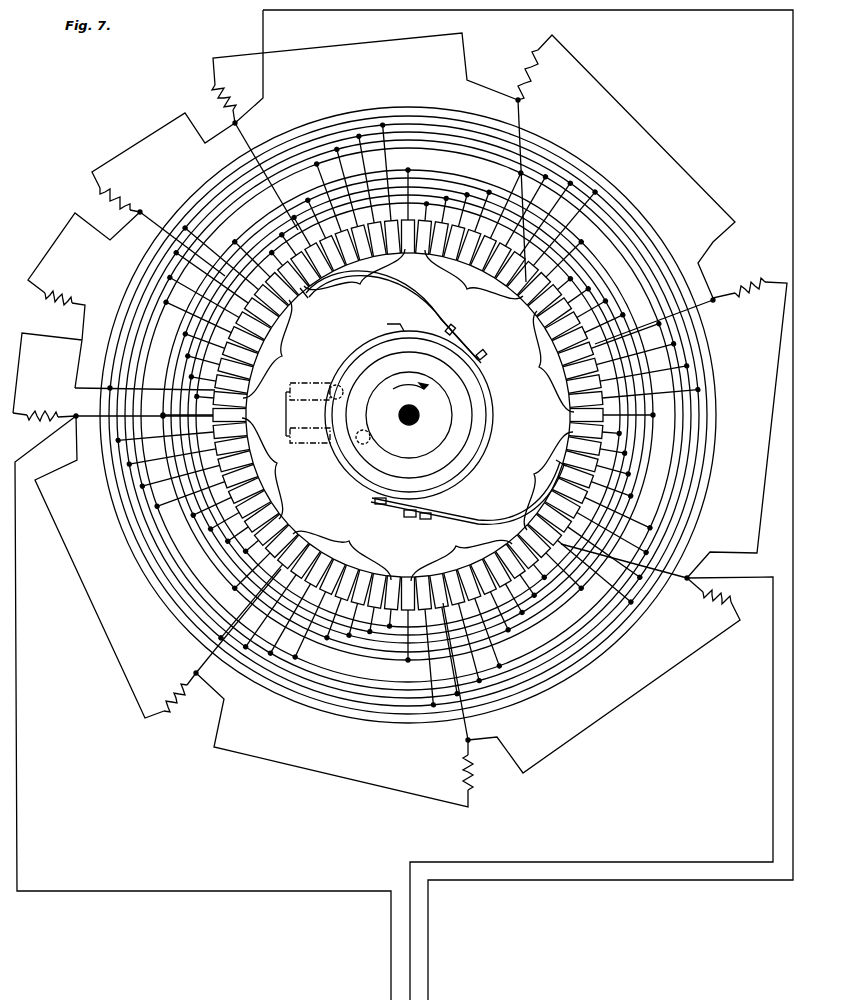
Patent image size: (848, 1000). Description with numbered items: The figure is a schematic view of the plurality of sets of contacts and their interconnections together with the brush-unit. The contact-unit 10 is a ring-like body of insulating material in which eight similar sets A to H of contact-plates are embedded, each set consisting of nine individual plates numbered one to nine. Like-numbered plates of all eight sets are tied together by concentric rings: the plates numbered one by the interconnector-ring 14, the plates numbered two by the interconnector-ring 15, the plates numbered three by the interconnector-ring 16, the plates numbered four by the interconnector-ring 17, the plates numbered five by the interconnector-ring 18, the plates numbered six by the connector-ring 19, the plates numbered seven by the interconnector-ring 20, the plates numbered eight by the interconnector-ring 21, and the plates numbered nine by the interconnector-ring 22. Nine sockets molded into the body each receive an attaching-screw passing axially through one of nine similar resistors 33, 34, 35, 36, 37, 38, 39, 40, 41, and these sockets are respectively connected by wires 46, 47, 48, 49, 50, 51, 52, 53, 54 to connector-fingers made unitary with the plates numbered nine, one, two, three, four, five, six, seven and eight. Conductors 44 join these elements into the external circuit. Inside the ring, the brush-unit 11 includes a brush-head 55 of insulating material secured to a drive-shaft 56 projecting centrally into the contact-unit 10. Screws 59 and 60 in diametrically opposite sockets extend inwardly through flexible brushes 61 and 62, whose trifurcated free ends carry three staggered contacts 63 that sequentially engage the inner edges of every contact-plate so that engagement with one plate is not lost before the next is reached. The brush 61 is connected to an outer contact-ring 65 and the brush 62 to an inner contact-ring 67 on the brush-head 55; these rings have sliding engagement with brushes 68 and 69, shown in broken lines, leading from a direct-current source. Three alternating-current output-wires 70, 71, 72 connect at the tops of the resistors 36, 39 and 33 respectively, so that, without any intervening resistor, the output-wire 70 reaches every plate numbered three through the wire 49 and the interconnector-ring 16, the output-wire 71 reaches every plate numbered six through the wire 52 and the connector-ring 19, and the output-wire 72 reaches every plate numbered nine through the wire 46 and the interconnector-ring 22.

The contact-unit 10 is at (420, 175).
The brush-unit 11 is at (417, 406).
The interconnector-ring 14 is at (231, 163).
The interconnector-ring 15 is at (267, 214).
The interconnector-ring 16 is at (282, 160).
The interconnector-ring 17 is at (646, 490).
The interconnector-ring 18 is at (262, 700).
The connector-ring 19 is at (275, 632).
The interconnector-ring 20 is at (258, 620).
The interconnector-ring 21 is at (381, 108).
The interconnector-ring 22 is at (432, 168).
The resistor 33 is at (45, 410).
The resistor 34 is at (68, 290).
The resistor 35 is at (124, 200).
The resistor 36 is at (232, 92).
The resistor 37 is at (536, 76).
The resistor 38 is at (752, 298).
The resistor 39 is at (715, 605).
The resistor 40 is at (463, 773).
The resistor 41 is at (165, 696).
The connecting conductor 44 is at (172, 128).
The wire 46 is at (90, 414).
The wire 47 is at (93, 387).
The wire 48 is at (125, 280).
The wire 49 is at (248, 140).
The wire 50 is at (519, 117).
The wire 51 is at (706, 308).
The wire 52 is at (672, 580).
The wire 53 is at (464, 733).
The wire 54 is at (207, 669).
The brush-head 55 is at (348, 470).
The drive-shaft 56 is at (409, 425).
The screw 59 is at (452, 333).
The screw 60 is at (422, 517).
The flexible brush 61 is at (416, 294).
The flexible brush 62 is at (482, 518).
The contacts 63 is at (307, 294).
The outer contact-ring 65 is at (490, 403).
The inner contact-ring 67 is at (420, 404).
The brush 68 is at (324, 383).
The brush 69 is at (300, 445).
The alternating-current output-wire 70 is at (265, 86).
The alternating-current output-wire 71 is at (752, 576).
The alternating-current output-wire 72 is at (52, 440).